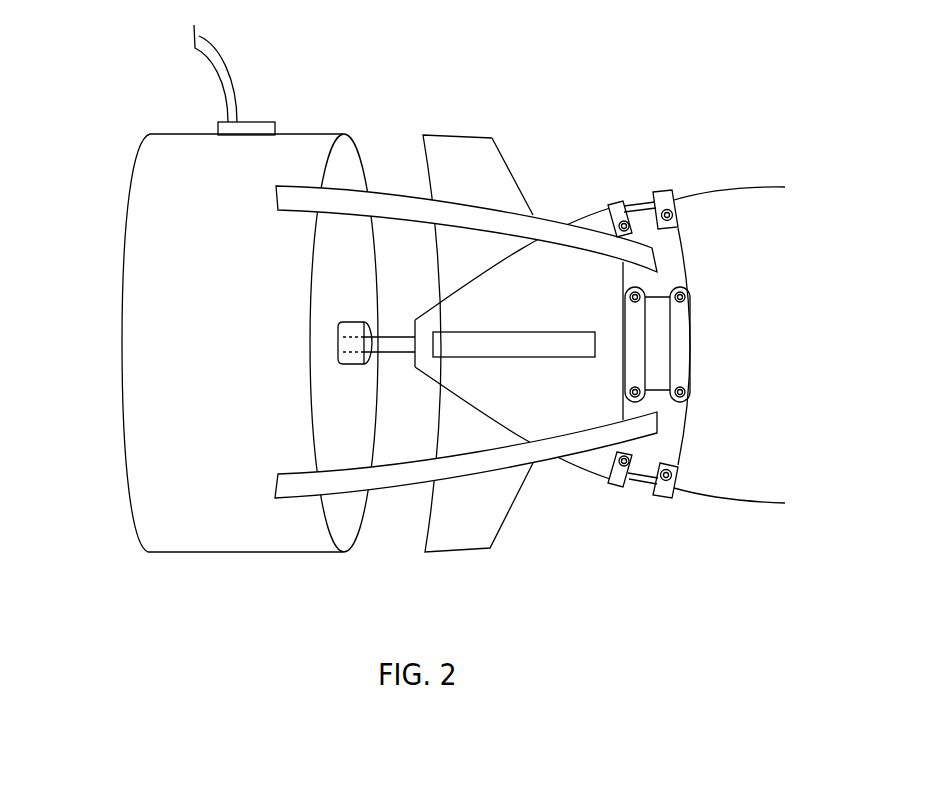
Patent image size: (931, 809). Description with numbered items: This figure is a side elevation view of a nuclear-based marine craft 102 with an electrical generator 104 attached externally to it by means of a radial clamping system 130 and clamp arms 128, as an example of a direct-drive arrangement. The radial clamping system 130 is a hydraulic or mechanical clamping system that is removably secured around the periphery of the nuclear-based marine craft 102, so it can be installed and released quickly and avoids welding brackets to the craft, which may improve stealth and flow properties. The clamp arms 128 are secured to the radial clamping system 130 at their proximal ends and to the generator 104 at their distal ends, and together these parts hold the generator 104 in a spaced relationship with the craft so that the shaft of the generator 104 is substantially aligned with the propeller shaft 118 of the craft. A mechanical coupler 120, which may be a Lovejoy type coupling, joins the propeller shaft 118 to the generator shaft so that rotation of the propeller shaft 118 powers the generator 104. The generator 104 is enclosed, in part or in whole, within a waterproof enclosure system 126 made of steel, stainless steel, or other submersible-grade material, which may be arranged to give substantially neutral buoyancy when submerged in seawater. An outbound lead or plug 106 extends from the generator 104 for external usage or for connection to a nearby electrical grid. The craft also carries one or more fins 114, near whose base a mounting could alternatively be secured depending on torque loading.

The nuclear-based marine craft 102 is at (783, 353).
The electrical generator 104 is at (133, 440).
The outbound lead or plug 106 is at (218, 50).
The fin 114 is at (497, 157).
The propeller shaft 118 is at (388, 340).
The mechanical coupler 120 is at (350, 323).
The waterproof enclosure system 126 is at (243, 355).
The clamp arms 128 is at (540, 228).
The radial clamping system 130 is at (647, 463).